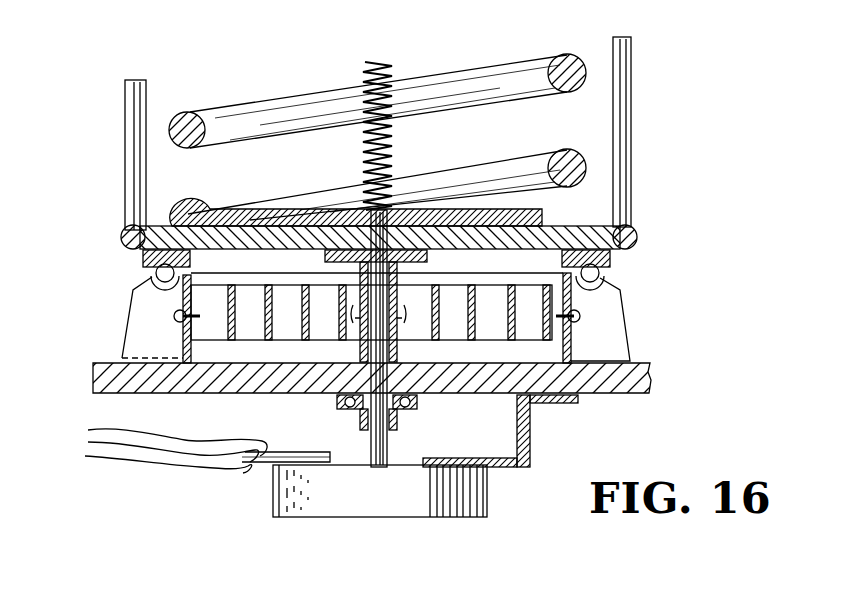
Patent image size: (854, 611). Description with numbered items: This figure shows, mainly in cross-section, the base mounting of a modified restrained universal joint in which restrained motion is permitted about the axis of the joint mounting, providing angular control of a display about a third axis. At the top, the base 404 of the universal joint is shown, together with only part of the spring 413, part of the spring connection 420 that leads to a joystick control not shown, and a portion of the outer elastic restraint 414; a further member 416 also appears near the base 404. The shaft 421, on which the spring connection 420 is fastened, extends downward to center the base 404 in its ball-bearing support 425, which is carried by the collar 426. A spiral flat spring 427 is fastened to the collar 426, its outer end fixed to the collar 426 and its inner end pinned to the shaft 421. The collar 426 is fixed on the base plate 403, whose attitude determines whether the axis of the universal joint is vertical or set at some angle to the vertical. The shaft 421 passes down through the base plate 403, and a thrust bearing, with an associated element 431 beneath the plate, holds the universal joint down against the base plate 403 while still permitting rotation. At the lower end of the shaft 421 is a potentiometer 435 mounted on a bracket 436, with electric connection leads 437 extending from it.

The base plate 403 is at (445, 385).
The base 404 is at (458, 250).
The spring 413 is at (236, 127).
The outer elastic restraint 414 is at (130, 168).
The top plate 416 is at (542, 217).
The spring connection 420 is at (393, 146).
The shaft 421 is at (365, 238).
The ball-bearing support 425 is at (148, 274).
The collar 426 is at (178, 310).
The spiral flat spring 427 is at (299, 343).
The bearing 431 is at (330, 409).
The potentiometer 435 is at (280, 495).
The bracket 436 is at (531, 436).
The electric connection leads 437 is at (150, 455).